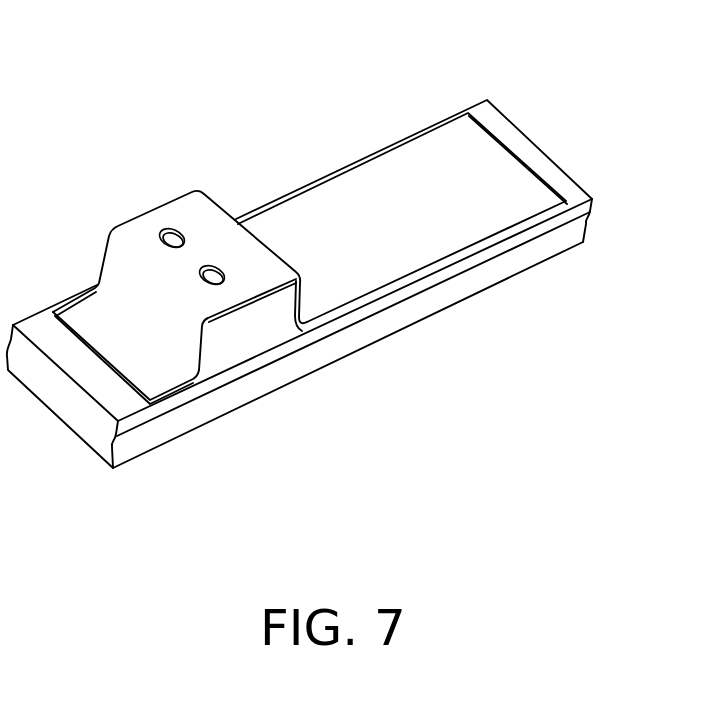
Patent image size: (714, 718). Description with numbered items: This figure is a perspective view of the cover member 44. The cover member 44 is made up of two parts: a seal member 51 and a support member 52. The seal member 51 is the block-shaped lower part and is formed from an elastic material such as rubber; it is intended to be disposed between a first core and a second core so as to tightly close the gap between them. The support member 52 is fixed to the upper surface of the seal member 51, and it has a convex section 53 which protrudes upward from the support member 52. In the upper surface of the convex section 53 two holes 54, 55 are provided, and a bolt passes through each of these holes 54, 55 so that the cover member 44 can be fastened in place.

The cover member 44 is at (305, 116).
The seal member 51 is at (353, 345).
The support member 52 is at (403, 177).
The convex section 53 is at (180, 284).
The hole 54 is at (161, 234).
The hole 55 is at (222, 281).